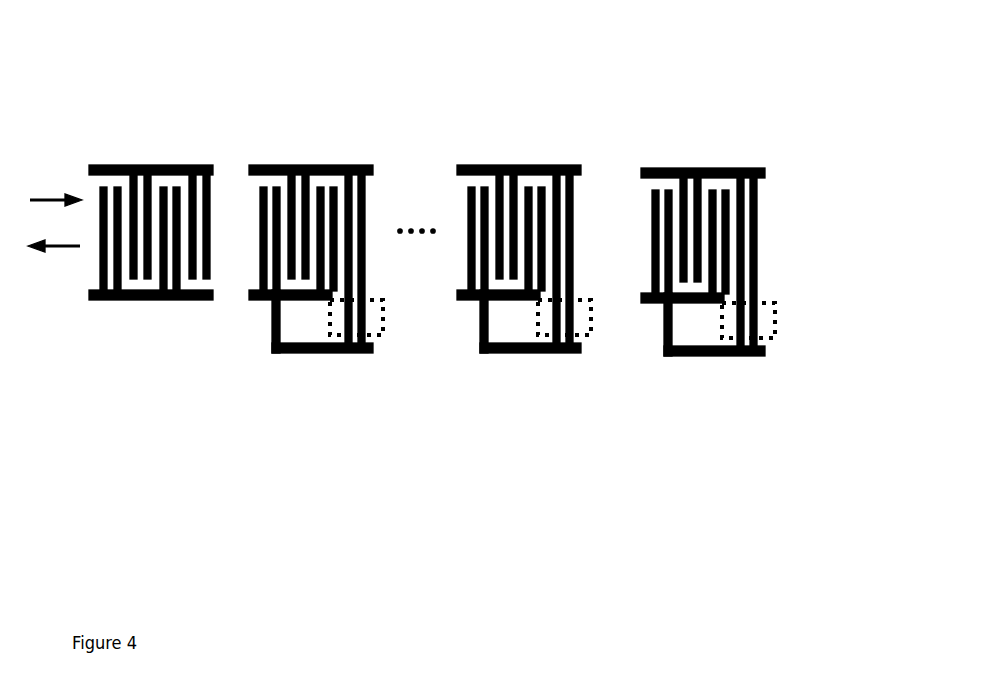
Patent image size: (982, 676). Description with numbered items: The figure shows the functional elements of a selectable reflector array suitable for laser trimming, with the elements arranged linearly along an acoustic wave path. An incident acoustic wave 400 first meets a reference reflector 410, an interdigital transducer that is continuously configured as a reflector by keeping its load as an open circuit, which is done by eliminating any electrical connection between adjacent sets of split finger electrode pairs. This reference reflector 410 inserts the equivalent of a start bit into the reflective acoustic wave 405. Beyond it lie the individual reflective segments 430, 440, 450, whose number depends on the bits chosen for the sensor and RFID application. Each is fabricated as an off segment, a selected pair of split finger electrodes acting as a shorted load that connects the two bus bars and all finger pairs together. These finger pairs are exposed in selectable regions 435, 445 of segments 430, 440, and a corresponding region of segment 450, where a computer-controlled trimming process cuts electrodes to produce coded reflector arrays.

The incident acoustic wave 400 is at (65, 170).
The reflective acoustic wave 405 is at (47, 291).
The reference reflector 410 is at (160, 330).
The first reflective segment 430 is at (265, 139).
The selectable region 435 is at (390, 338).
The reflective segment 440 is at (477, 142).
The selectable region 445 is at (591, 340).
The reflective segment 450 is at (793, 412).